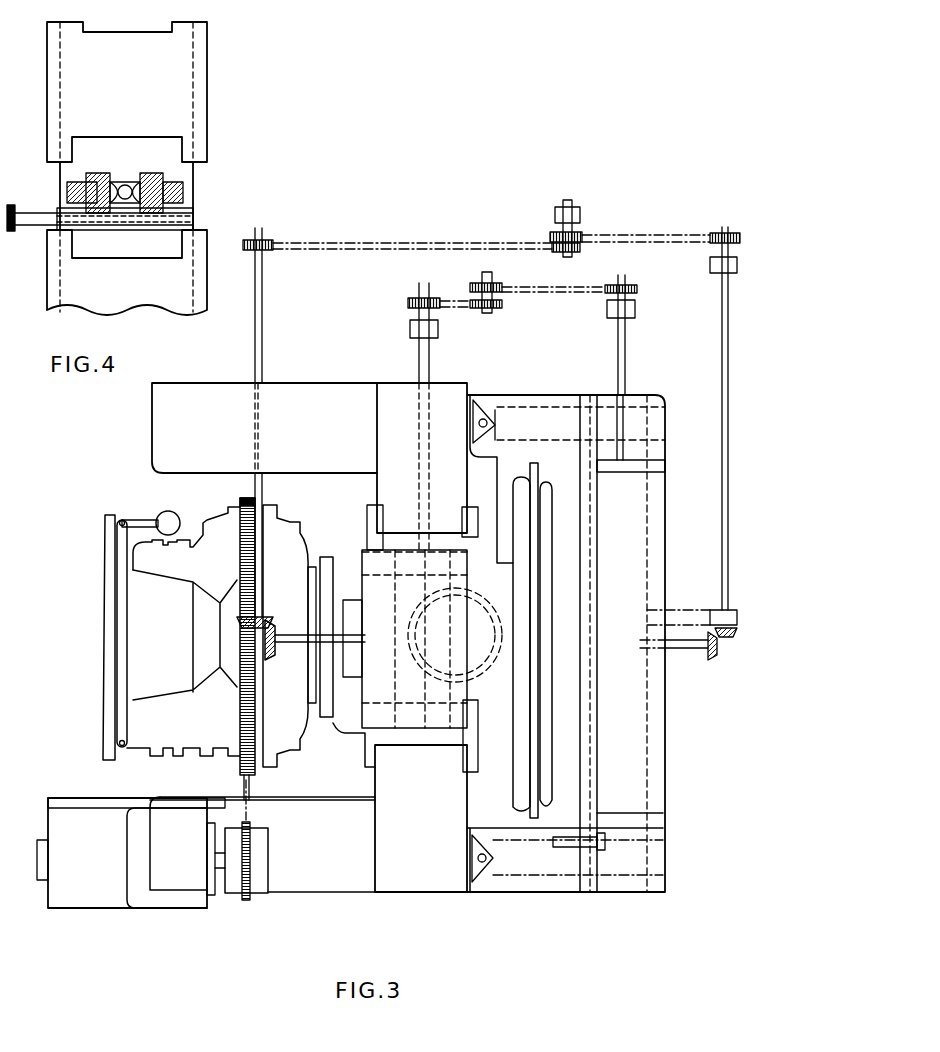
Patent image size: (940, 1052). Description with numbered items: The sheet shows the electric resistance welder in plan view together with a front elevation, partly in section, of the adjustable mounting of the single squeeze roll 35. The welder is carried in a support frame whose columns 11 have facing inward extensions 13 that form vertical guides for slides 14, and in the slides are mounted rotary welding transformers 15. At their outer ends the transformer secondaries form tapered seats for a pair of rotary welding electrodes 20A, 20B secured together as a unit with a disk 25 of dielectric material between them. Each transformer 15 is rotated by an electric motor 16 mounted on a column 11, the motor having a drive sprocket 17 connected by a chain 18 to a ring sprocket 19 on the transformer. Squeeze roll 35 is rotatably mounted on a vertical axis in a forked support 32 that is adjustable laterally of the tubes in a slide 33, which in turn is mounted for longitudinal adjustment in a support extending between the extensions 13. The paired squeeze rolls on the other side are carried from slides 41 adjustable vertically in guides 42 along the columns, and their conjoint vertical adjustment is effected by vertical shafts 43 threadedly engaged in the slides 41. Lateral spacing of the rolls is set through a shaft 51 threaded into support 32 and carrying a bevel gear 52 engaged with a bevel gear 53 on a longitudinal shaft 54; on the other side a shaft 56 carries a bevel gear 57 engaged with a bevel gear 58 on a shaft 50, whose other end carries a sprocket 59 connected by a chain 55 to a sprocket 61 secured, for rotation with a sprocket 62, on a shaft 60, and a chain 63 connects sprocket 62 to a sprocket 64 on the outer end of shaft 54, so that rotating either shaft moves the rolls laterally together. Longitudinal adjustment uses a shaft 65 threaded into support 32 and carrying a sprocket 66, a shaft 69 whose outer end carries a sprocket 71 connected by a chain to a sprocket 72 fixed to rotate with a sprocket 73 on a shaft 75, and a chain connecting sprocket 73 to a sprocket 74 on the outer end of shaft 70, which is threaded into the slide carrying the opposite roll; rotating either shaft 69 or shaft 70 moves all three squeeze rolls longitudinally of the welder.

In FIG. 3, the columns 11 is at (318, 385).
In FIG. 4, the inward extensions 13 is at (197, 173).
In FIG. 3, the inward extensions 13 is at (385, 486).
In FIG. 4, the slide 14 is at (180, 78).
In FIG. 3, the slide 14 is at (372, 748).
In FIG. 3, the rotary welding transformer 15 is at (326, 540).
In FIG. 3, the electric motor 16 is at (212, 896).
In FIG. 3, the drive sprocket 17 is at (247, 900).
In FIG. 3, the chain 18 is at (250, 806).
In FIG. 3, the ring sprocket 19 is at (242, 497).
In FIG. 3, the guide bar 20A is at (513, 505).
In FIG. 3, the guide bar 20B is at (540, 540).
In FIG. 3, the disk 25 is at (540, 462).
In FIG. 4, the forked support 32 is at (90, 173).
In FIG. 4, the slide 33 is at (185, 197).
In FIG. 4, the squeeze roll 35 is at (125, 184).
In FIG. 3, the squeeze roll 35 is at (435, 628).
In FIG. 3, the slides 41 is at (486, 415).
In FIG. 3, the guides 42 is at (481, 400).
In FIG. 3, the vertical shafts 43 is at (488, 423).
In FIG. 3, the shaft 50 is at (728, 487).
In FIG. 4, the shaft 51 is at (140, 180).
In FIG. 3, the shaft 51 is at (352, 650).
In FIG. 3, the bevel gear 52 is at (268, 655).
In FIG. 3, the bevel gear 53 is at (237, 620).
In FIG. 3, the shaft 54 is at (263, 292).
In FIG. 3, the chain 55 is at (646, 222).
In FIG. 3, the shaft 56 is at (682, 650).
In FIG. 3, the bevel gear 57 is at (716, 658).
In FIG. 3, the bevel gear 58 is at (738, 632).
In FIG. 3, the sprocket 59 is at (735, 233).
In FIG. 3, the shaft 60 is at (565, 256).
In FIG. 3, the sprocket 61 is at (578, 232).
In FIG. 3, the sprocket 62 is at (582, 249).
In FIG. 3, the chain 63 is at (415, 240).
In FIG. 3, the sprocket 64 is at (270, 242).
In FIG. 4, the shaft 65 is at (30, 227).
In FIG. 4, the sprocket 66 is at (12, 204).
In FIG. 3, the shaft 69 is at (430, 358).
In FIG. 3, the shaft 70 is at (625, 358).
In FIG. 3, the sprocket 71 is at (407, 302).
In FIG. 3, the sprocket 72 is at (502, 305).
In FIG. 3, the sprocket 73 is at (500, 283).
In FIG. 3, the sprocket 74 is at (637, 289).
In FIG. 3, the shaft 75 is at (482, 277).